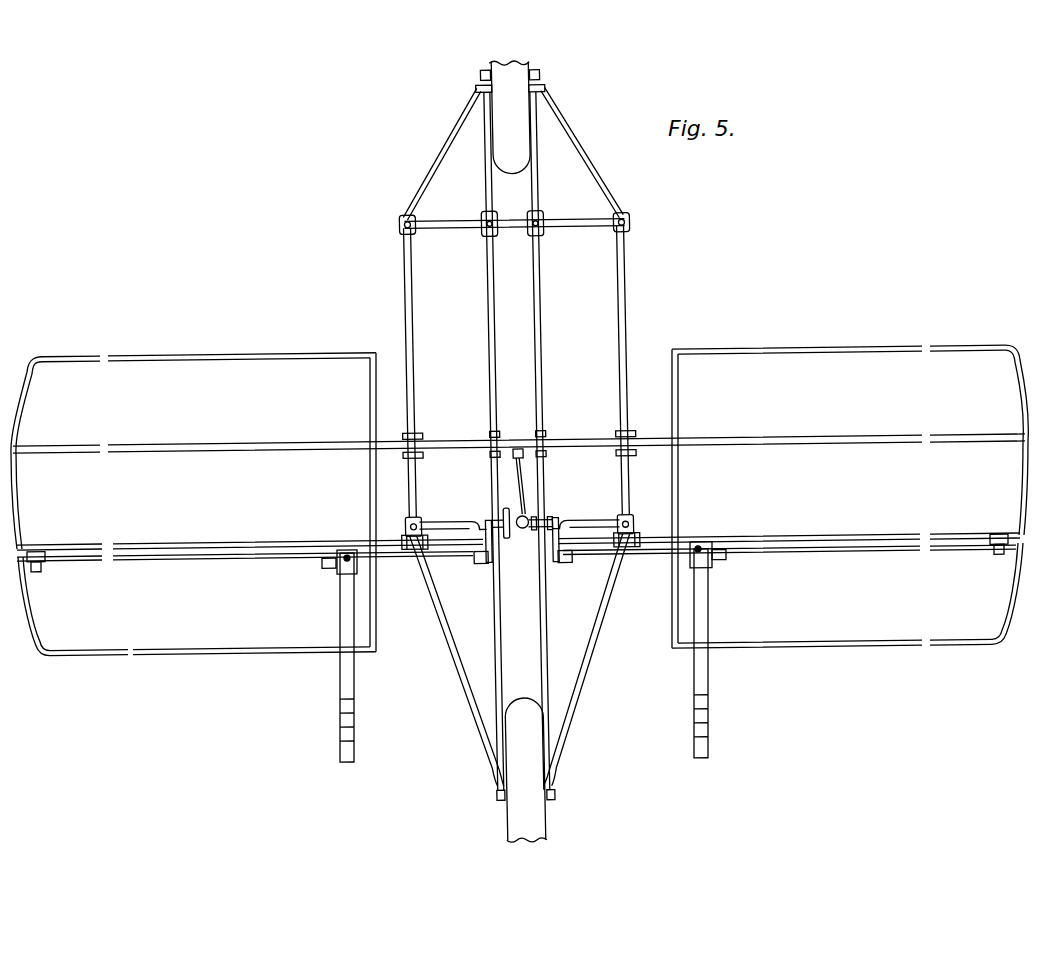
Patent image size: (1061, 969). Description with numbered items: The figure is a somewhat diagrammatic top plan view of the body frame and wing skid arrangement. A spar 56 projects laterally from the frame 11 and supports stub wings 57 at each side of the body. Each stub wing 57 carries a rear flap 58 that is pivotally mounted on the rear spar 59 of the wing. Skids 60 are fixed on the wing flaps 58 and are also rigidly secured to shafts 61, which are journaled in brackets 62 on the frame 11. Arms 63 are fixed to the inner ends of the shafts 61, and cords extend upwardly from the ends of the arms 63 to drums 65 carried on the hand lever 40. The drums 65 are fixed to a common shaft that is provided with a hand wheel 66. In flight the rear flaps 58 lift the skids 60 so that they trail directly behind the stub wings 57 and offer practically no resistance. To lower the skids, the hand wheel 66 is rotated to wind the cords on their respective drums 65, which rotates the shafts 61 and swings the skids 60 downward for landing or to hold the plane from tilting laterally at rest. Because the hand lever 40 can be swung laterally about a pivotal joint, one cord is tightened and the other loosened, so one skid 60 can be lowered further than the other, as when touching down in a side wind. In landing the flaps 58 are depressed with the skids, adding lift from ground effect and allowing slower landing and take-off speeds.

The frame 11 is at (545, 309).
The hand lever 40 is at (524, 503).
The spar 56 is at (244, 441).
The stub wings 57 is at (162, 365).
The rear flaps 58 is at (93, 643).
The rear spars 59 is at (217, 546).
The skids 60 is at (347, 668).
The shaft 61 is at (405, 557).
The brackets 62 is at (474, 557).
The arms 63 is at (550, 549).
The drums 65 is at (526, 517).
The hand wheel 66 is at (503, 520).